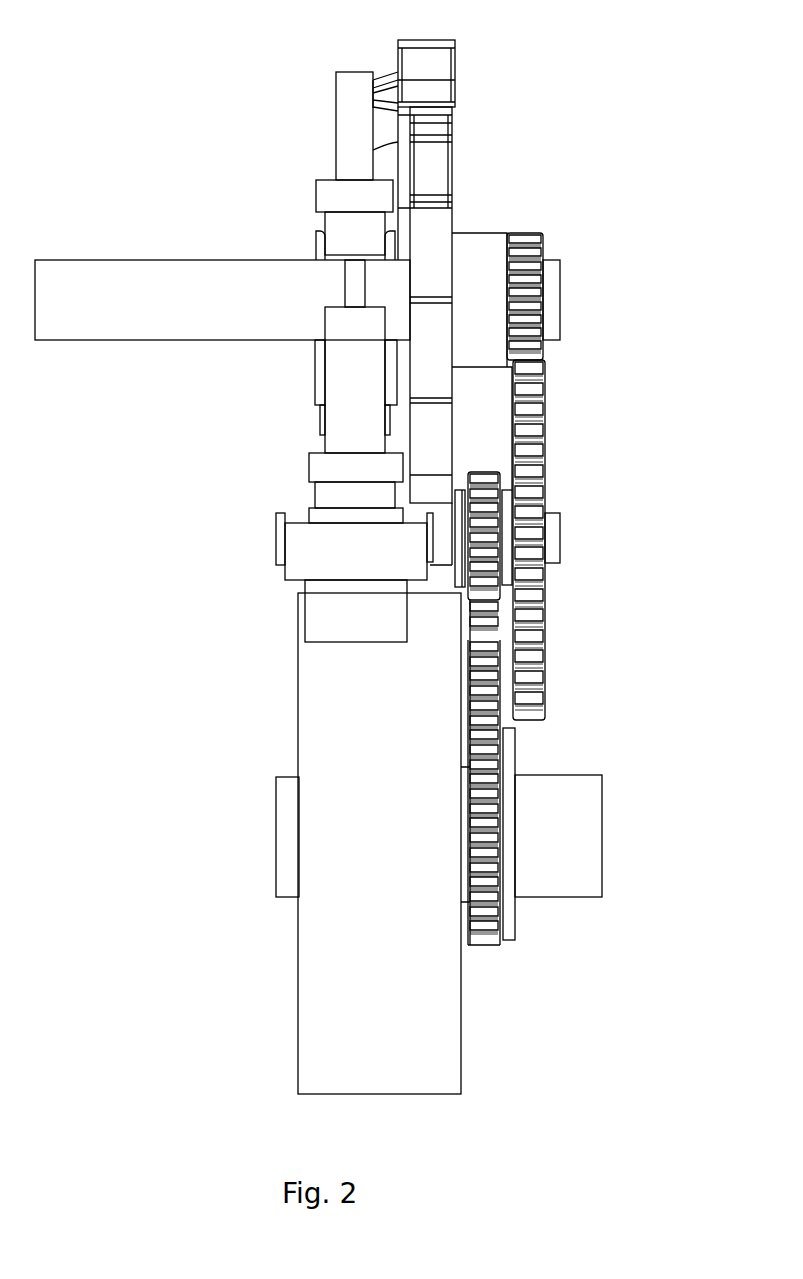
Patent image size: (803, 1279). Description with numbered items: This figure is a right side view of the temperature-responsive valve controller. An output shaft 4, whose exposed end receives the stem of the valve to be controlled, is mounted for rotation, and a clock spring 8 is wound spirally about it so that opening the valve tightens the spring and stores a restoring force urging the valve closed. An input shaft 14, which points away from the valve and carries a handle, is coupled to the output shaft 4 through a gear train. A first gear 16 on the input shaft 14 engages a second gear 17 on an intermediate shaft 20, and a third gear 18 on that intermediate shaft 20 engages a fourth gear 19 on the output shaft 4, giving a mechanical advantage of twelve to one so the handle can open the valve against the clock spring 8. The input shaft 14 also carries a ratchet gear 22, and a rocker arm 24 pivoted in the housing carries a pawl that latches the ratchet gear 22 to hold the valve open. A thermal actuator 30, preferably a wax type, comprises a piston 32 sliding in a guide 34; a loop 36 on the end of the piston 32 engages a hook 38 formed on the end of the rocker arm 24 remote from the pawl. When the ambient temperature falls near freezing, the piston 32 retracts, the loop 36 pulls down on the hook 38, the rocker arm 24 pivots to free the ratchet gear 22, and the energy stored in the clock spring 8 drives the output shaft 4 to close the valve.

The output shaft 4 is at (602, 808).
The clock spring 8 is at (442, 1040).
The input shaft 14 is at (198, 320).
The first gear 16 is at (545, 300).
The second gear 17 is at (535, 427).
The third gear 18 is at (490, 585).
The fourth gear 19 is at (490, 665).
The intermediate shaft 20 is at (560, 540).
The ratchet gear 22 is at (453, 253).
The rocker arm 24 is at (455, 90).
The thermal actuator 30 is at (248, 518).
The piston 32 is at (343, 288).
The guide 34 is at (345, 413).
The loop 36 is at (345, 137).
The hook 38 is at (385, 72).